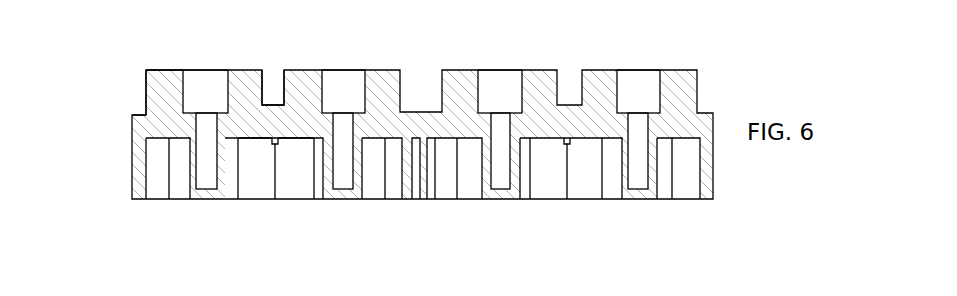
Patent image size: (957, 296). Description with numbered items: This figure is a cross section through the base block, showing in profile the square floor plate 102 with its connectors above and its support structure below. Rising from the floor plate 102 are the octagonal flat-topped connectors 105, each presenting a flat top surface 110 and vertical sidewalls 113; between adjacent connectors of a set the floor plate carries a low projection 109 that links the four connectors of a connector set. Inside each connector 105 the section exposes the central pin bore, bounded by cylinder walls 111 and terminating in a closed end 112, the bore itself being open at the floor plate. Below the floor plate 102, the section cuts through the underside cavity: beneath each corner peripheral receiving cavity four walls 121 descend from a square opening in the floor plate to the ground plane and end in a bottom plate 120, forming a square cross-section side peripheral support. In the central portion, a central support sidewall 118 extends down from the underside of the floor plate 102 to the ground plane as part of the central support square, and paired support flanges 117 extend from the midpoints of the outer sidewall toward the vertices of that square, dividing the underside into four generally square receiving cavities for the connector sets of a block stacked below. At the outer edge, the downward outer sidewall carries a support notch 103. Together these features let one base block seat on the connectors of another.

The floor plate 102 is at (424, 102).
The support notch 103 is at (150, 202).
The octagonal flat-topped connector 105 is at (164, 105).
The low projection 109 is at (275, 92).
The top surface 110 is at (148, 60).
The cylinder wall 111 is at (192, 84).
The closed end 112 is at (221, 102).
The vertical sidewall 113 is at (136, 86).
The support flange 117 is at (428, 212).
The central support sidewall 118 is at (382, 194).
The bottom plate 120 is at (277, 212).
The wall 121 is at (263, 188).